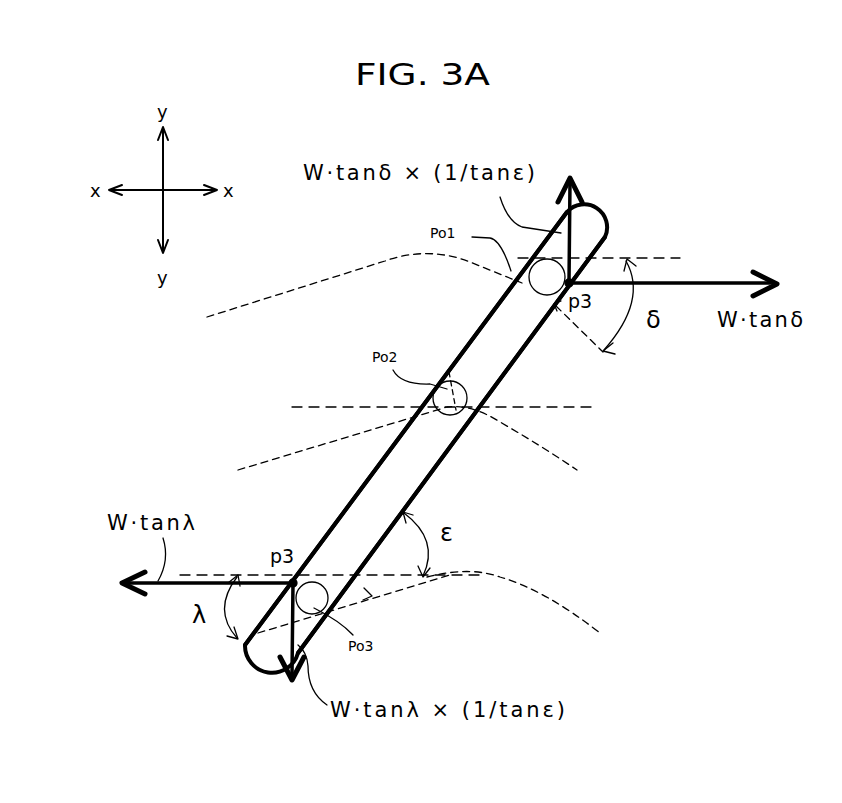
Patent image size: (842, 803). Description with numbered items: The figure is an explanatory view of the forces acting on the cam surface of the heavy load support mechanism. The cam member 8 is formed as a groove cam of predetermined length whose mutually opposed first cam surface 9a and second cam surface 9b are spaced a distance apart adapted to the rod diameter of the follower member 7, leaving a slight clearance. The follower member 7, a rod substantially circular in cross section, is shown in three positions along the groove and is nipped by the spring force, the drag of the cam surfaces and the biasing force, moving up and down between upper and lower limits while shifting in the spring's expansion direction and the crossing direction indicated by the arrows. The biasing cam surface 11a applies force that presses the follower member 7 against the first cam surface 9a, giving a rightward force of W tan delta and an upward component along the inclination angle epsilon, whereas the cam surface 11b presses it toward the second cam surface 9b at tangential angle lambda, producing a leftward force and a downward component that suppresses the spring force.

The follower member 7 is at (542, 283).
The cam member 8 is at (619, 204).
The first cam surface 9a is at (521, 348).
The second cam surface 9b is at (322, 537).
The cam surface 11a is at (580, 320).
The cam surface 11b is at (319, 281).